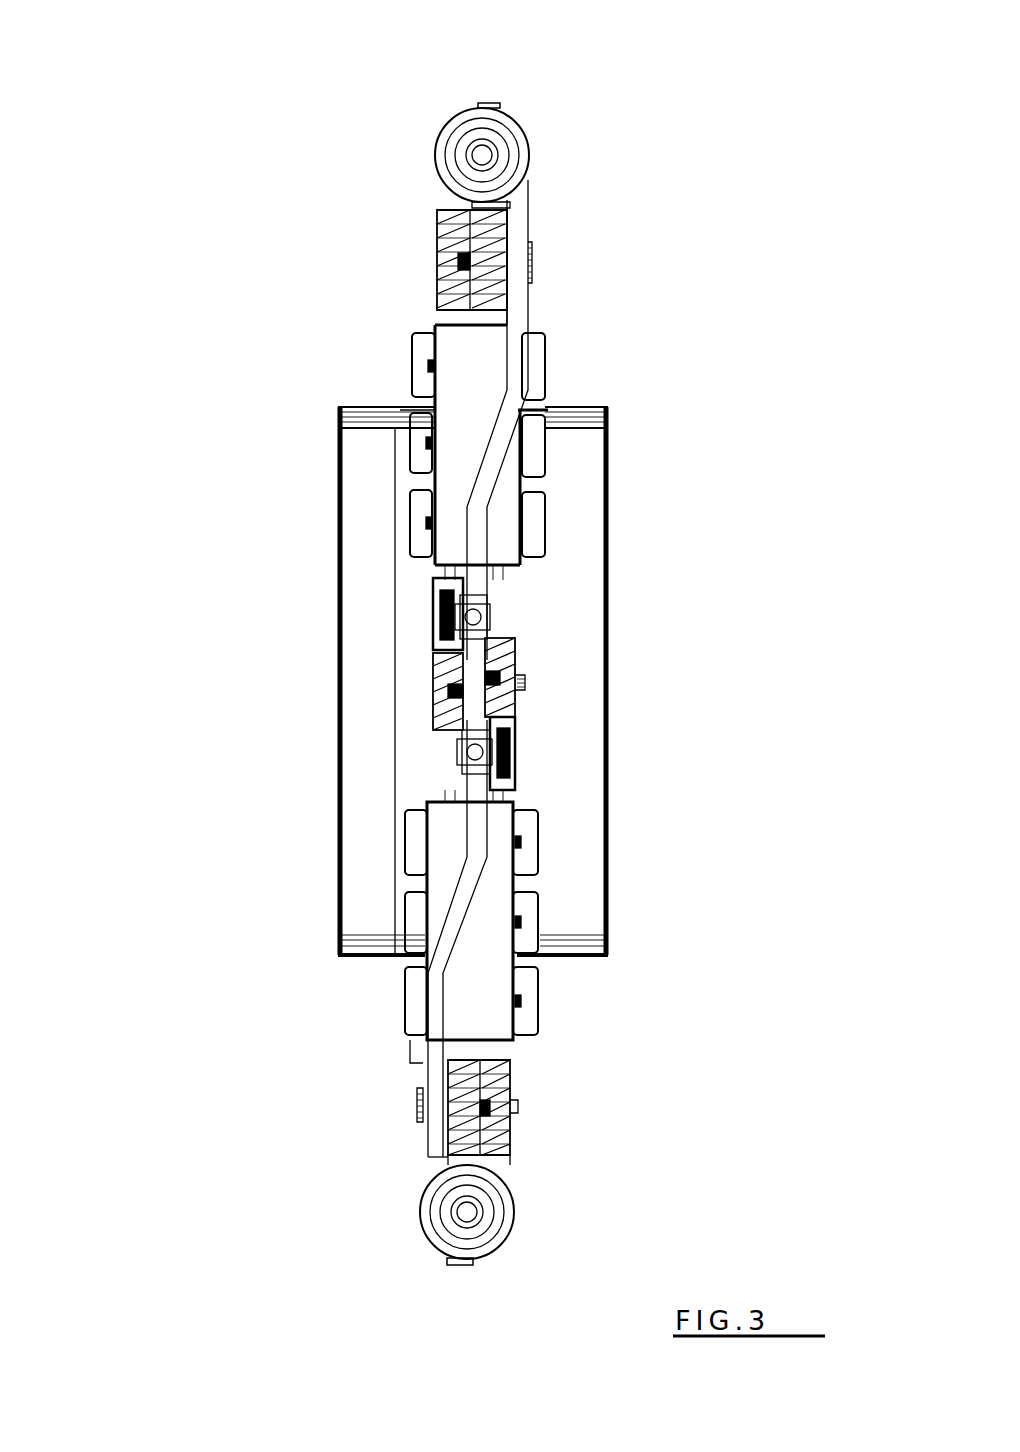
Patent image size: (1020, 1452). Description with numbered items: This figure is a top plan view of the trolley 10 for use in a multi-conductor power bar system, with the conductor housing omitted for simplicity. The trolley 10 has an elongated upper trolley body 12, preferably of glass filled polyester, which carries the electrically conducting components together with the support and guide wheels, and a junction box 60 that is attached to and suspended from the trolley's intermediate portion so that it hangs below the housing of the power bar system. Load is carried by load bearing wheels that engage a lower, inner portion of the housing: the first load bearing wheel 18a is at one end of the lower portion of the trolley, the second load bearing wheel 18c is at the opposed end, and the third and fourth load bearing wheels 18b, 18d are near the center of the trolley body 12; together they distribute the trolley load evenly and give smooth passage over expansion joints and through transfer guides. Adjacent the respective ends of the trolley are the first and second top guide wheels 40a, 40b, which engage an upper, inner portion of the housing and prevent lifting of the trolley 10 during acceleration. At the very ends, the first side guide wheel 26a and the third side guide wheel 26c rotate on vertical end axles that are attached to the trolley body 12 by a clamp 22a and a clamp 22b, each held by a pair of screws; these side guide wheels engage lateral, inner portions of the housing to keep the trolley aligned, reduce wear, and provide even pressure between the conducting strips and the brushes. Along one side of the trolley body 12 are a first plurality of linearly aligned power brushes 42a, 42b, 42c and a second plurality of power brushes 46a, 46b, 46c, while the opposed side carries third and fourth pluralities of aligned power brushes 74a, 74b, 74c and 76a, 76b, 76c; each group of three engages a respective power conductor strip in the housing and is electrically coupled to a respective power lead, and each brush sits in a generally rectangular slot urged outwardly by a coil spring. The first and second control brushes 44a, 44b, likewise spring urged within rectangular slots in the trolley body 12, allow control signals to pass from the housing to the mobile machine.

The trolley 10 is at (185, 337).
The trolley body 12 is at (490, 425).
The first load bearing wheel 18a is at (495, 1128).
The third load bearing wheel 18b is at (505, 660).
The second load bearing wheel 18c is at (450, 215).
The fourth load bearing wheel 18d is at (432, 705).
The clamp 22a is at (462, 1265).
The clamp 22b is at (485, 105).
The first side guide wheel 26a is at (427, 1212).
The third side guide wheel 26c is at (518, 135).
The first top guide wheel 40a is at (455, 1078).
The second top guide wheel 40b is at (505, 240).
The power brush 42a is at (530, 1010).
The power brush 42b is at (536, 905).
The power brush 42c is at (540, 826).
The first control brush 44a is at (500, 750).
The second control brush 44b is at (445, 615).
The power brush 46a is at (540, 518).
The power brush 46b is at (540, 453).
The power brush 46c is at (540, 360).
The junction box 60 is at (612, 636).
The power brush 74a is at (420, 510).
The power brush 74b is at (415, 440).
The power brush 74c is at (420, 340).
The power brush 76a is at (405, 985).
The power brush 76b is at (410, 921).
The power brush 76c is at (415, 842).